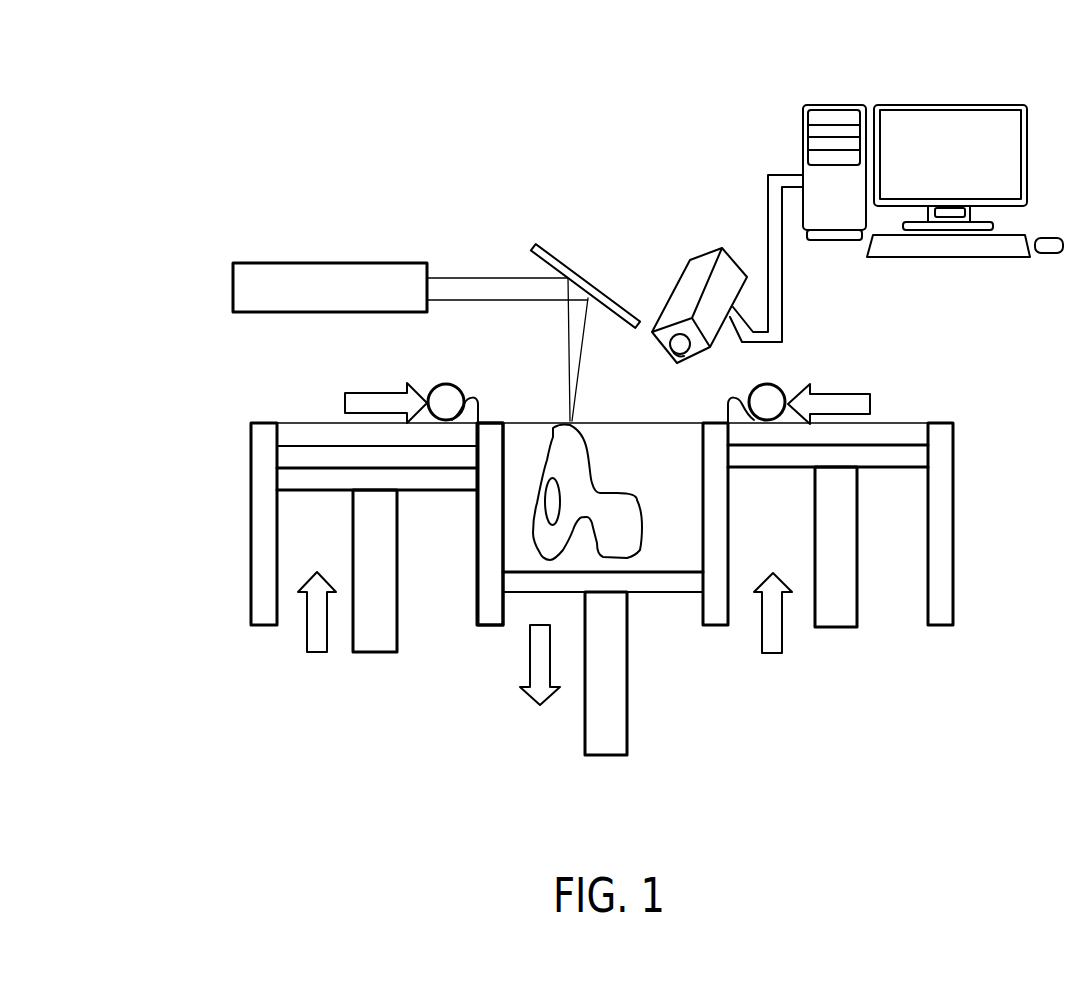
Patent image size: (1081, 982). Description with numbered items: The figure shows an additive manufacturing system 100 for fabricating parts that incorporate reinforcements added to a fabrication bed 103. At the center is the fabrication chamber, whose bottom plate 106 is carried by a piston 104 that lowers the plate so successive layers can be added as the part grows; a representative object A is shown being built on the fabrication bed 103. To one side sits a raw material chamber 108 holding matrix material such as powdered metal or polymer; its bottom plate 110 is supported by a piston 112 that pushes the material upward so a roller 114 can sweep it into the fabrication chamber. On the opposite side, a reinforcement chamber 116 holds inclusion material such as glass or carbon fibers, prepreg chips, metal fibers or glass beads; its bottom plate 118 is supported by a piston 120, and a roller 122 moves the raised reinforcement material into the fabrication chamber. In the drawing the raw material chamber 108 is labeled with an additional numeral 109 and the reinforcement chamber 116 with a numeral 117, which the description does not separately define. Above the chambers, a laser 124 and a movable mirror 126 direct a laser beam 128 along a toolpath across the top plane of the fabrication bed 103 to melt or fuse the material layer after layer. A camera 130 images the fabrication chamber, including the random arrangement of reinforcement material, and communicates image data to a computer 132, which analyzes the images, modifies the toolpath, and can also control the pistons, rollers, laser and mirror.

The additive manufacturing system 100 is at (174, 89).
The fabrication bed 103 is at (633, 406).
The piston 104 is at (582, 728).
The bottom plate 106 is at (658, 596).
The raw material chamber 108 is at (302, 423).
The left table plate 109 is at (308, 450).
The bottom plate 110 is at (430, 494).
The piston 112 is at (372, 496).
The roller 114 is at (420, 381).
The reinforcement chamber 116 is at (914, 398).
The right table plate 117 is at (900, 433).
The bottom plate 118 is at (885, 470).
The piston 120 is at (857, 609).
The roller 122 is at (776, 385).
The laser 124 is at (262, 265).
The mirror 126 is at (596, 280).
The laser beam 128 is at (492, 276).
The camera 130 is at (720, 236).
The computer 132 is at (909, 87).
The object A is at (555, 460).